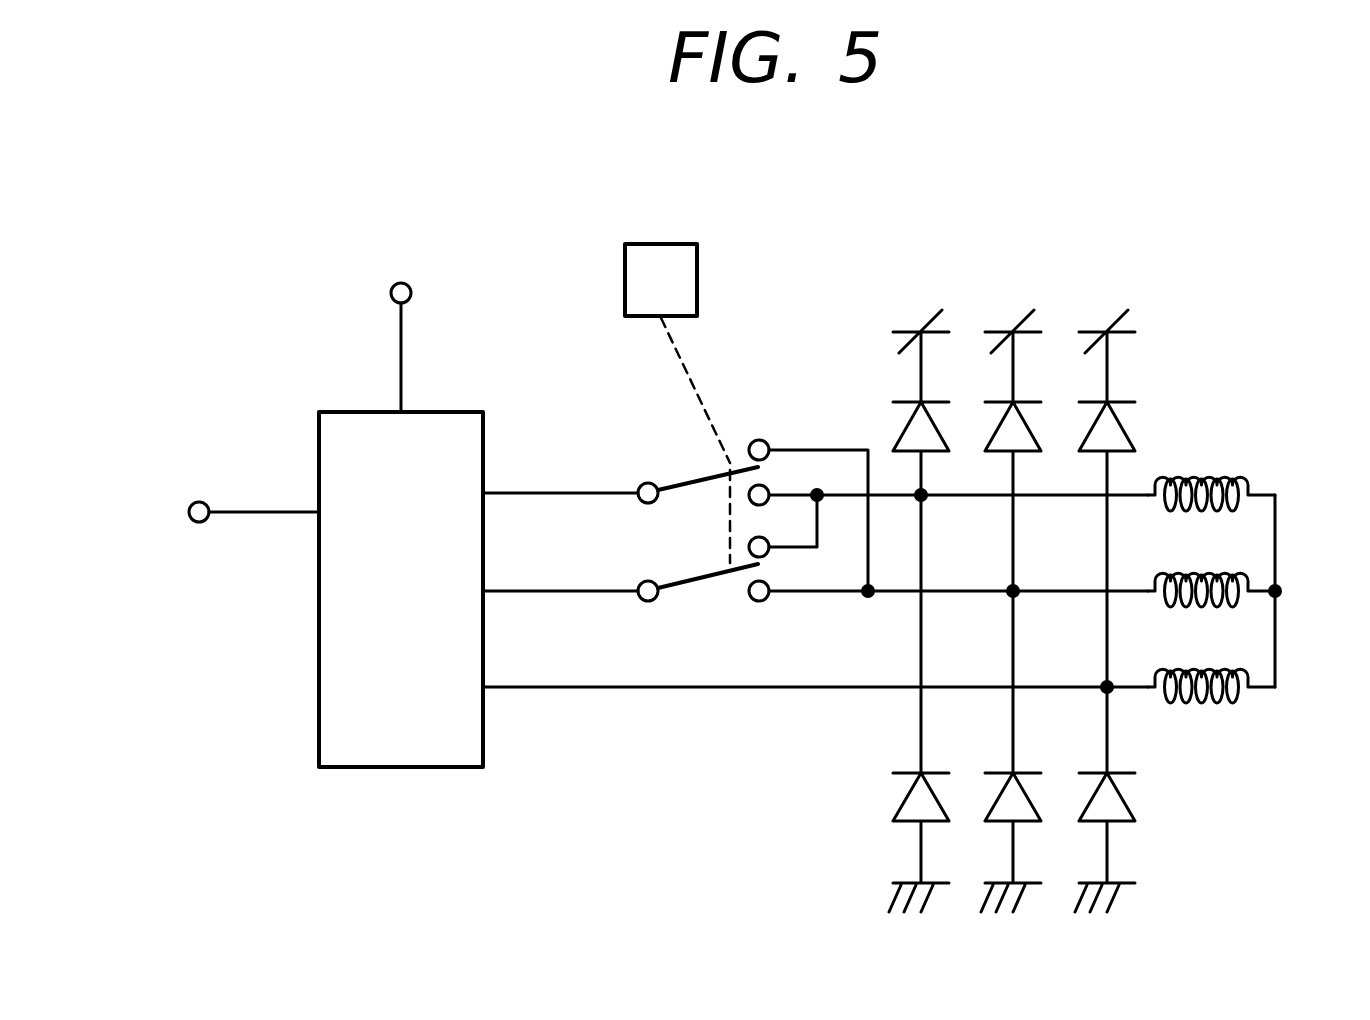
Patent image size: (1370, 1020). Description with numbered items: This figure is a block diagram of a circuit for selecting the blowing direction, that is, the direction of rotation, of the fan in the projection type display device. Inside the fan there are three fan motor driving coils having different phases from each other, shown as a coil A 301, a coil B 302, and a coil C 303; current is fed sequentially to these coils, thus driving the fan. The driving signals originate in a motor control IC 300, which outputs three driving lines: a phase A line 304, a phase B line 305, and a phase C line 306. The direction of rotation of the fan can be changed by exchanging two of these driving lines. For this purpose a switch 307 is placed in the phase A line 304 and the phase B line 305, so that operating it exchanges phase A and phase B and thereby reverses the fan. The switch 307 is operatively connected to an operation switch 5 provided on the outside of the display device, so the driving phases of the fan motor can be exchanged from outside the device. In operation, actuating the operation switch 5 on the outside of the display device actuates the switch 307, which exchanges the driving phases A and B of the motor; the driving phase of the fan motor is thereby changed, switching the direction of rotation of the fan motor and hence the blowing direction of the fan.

The operation switch 5 is at (668, 244).
The motor control IC 300 is at (341, 412).
The coil A 301 is at (1210, 478).
The coil B 302 is at (1227, 575).
The coil C 303 is at (1213, 698).
The phase A line 304 is at (553, 493).
The phase B line 305 is at (553, 591).
The phase C line 306 is at (553, 687).
The switch 307 is at (690, 478).